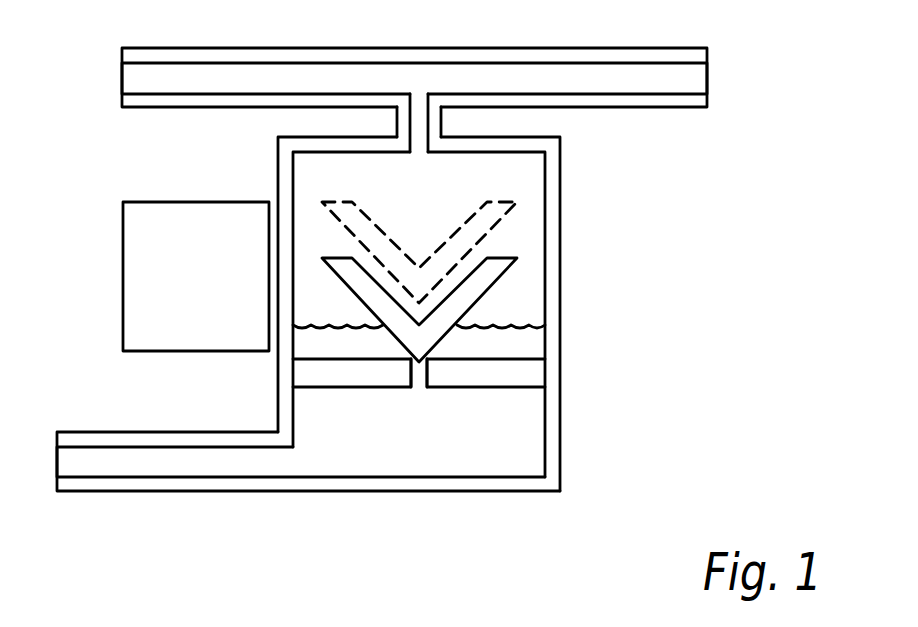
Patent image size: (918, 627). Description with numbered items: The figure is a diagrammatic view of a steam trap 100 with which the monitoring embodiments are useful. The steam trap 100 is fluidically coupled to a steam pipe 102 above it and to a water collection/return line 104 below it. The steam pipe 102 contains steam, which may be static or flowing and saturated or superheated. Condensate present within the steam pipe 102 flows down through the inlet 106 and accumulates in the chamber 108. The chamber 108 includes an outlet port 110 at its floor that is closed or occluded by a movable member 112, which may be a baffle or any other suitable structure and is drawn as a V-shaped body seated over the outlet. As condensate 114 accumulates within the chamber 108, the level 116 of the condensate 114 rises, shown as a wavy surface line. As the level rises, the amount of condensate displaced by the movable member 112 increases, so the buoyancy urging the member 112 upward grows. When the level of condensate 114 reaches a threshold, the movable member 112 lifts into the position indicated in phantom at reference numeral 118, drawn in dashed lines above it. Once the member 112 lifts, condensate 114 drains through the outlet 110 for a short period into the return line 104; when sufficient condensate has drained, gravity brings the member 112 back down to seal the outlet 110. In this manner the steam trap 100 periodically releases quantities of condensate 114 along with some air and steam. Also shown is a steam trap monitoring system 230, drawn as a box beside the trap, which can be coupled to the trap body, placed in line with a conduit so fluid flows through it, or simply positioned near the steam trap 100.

The steam trap 100 is at (560, 305).
The steam pipe 102 is at (582, 48).
The water collection/return line 104 is at (170, 492).
The inlet 106 is at (418, 143).
The chamber 108 is at (529, 173).
The outlet port 110 is at (415, 385).
The movable member 112 is at (510, 272).
The condensate 114 is at (525, 342).
The level of condensate 116 is at (507, 322).
The lifted position of movable member 118 is at (492, 217).
The steam trap monitoring system 230 is at (141, 245).